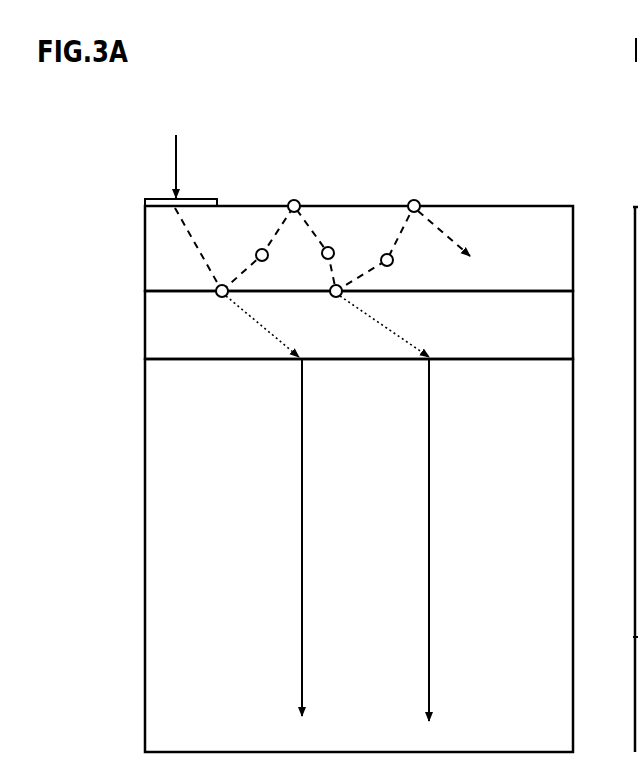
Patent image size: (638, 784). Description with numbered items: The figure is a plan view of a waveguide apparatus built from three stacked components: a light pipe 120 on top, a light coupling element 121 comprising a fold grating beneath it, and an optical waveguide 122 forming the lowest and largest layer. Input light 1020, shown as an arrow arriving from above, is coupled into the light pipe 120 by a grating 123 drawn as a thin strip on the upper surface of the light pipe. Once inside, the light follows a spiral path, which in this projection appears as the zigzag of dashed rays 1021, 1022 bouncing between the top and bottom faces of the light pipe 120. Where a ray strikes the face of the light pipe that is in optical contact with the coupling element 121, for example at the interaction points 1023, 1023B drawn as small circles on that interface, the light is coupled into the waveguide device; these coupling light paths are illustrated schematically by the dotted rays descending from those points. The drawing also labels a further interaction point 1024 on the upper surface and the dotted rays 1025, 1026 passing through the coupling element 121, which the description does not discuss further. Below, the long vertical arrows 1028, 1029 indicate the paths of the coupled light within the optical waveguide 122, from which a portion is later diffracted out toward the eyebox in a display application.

The light pipe 120 is at (145, 247).
The light coupling element 121 is at (145, 302).
The optical waveguide 122 is at (145, 723).
The grating 123 is at (145, 201).
The input light 1020 is at (177, 138).
The ray 1021 is at (195, 243).
The ray 1022 is at (458, 238).
The interaction point 1023 is at (216, 295).
The interaction point 1023B is at (331, 295).
The scattering particle at surface 1024 is at (419, 201).
The light transmitted into second layer 1025 is at (256, 320).
The light transmitted into second layer (second path) 1026 is at (412, 333).
The ray 1028 is at (301, 387).
The ray 1029 is at (428, 428).